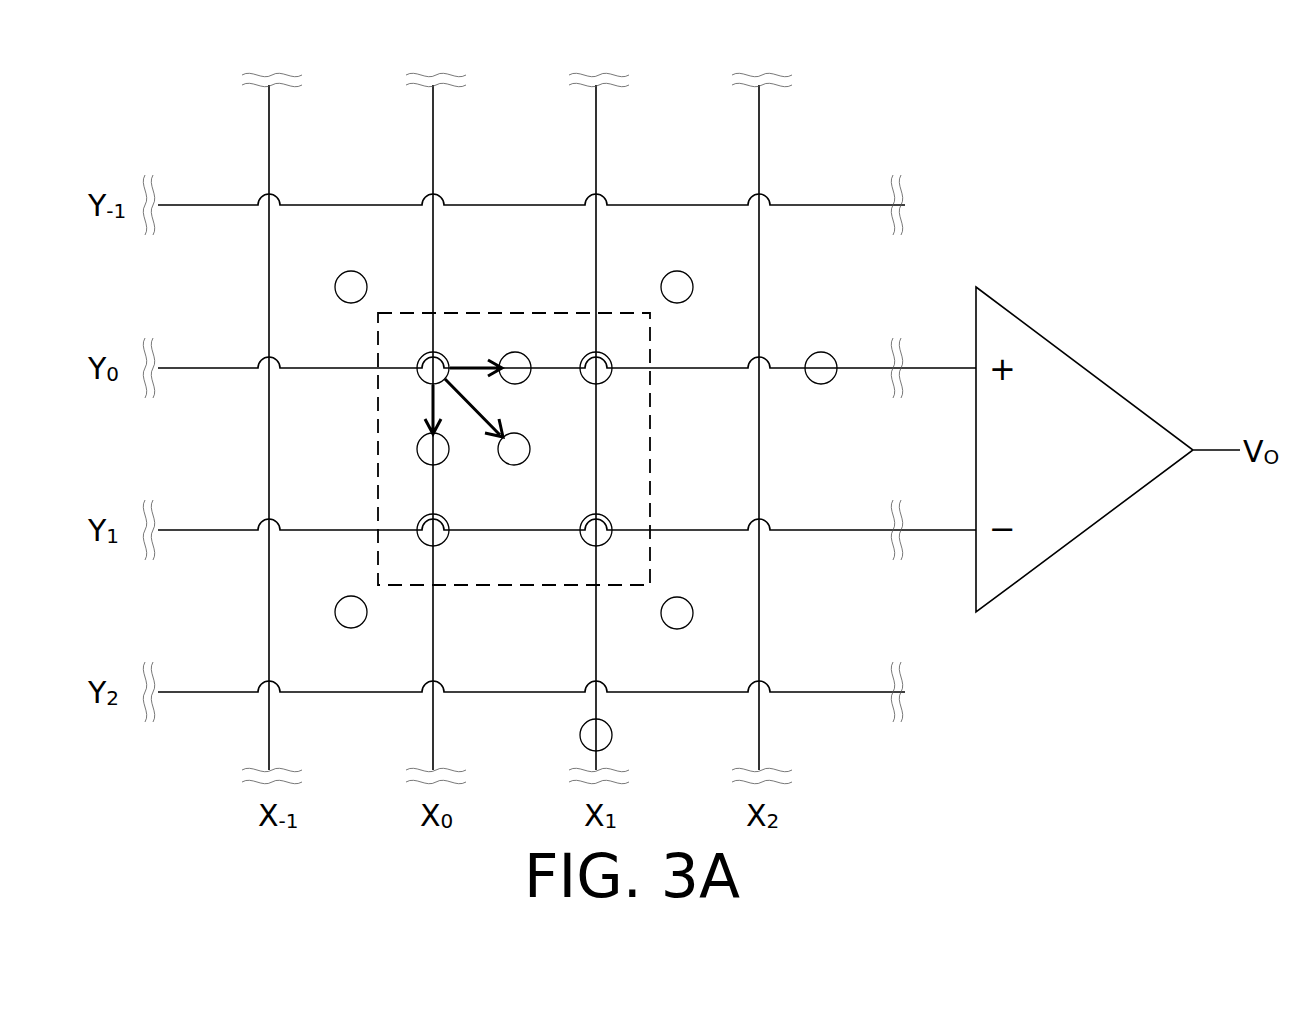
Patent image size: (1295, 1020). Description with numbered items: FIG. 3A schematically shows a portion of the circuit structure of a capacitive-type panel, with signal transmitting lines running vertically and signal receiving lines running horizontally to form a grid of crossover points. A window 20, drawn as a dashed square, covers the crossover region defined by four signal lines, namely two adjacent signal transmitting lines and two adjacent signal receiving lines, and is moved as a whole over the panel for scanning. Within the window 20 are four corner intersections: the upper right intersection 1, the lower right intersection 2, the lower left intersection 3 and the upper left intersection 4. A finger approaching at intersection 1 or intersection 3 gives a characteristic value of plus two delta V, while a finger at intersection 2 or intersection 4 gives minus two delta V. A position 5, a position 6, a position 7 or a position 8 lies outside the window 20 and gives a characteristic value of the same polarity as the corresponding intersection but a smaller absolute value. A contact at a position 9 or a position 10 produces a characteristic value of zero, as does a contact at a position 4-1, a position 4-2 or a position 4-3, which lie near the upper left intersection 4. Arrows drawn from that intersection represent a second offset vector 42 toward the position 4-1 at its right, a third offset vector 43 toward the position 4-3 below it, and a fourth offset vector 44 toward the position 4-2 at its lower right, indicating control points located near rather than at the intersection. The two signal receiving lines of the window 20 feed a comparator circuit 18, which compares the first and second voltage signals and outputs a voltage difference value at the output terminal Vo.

The upper right intersection 1 is at (610, 356).
The lower right intersection 2 is at (610, 522).
The lower left intersection 3 is at (417, 538).
The upper left intersection 4 is at (423, 351).
The position 4-1 is at (517, 352).
The position 4-2 is at (514, 466).
The position 4-3 is at (417, 450).
The position 5 is at (694, 285).
The position 6 is at (694, 612).
The position 7 is at (335, 612).
The position 8 is at (335, 287).
The position 9 is at (613, 735).
The position 10 is at (821, 385).
The comparator circuit 18 is at (1107, 385).
The window 20 is at (623, 313).
The second offset vector 42 is at (473, 363).
The third offset vector 43 is at (432, 405).
The fourth offset vector 44 is at (470, 405).